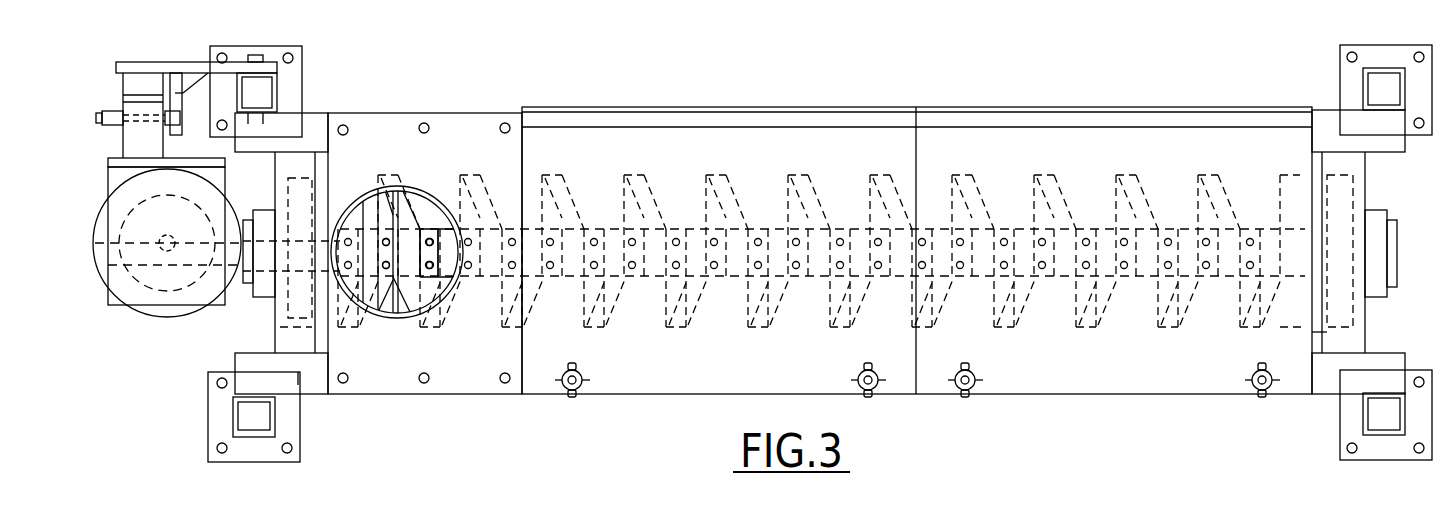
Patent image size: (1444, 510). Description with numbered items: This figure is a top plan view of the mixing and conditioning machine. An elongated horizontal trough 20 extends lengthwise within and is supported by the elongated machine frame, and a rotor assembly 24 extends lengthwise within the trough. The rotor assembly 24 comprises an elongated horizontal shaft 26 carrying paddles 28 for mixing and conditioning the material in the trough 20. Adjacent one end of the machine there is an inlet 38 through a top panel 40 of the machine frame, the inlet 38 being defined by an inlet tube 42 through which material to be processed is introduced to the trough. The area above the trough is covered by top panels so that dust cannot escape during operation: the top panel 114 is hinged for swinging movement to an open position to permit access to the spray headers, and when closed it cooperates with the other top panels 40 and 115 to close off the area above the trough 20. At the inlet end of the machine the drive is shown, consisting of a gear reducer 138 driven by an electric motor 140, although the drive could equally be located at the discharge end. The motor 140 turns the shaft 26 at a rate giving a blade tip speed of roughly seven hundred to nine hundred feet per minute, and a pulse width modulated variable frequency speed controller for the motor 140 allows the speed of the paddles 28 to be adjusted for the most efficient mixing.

The trough 20 is at (664, 158).
The rotor assembly 24 is at (1032, 330).
The shaft 26 is at (430, 228).
The paddles 28 is at (820, 184).
The inlet 38 is at (346, 212).
The top panel 40 is at (455, 115).
The inlet tube 42 is at (392, 305).
The top panel 114 is at (735, 133).
The top panel 115 is at (1120, 135).
The gear reducer 138 is at (118, 312).
The electric motor 140 is at (167, 312).